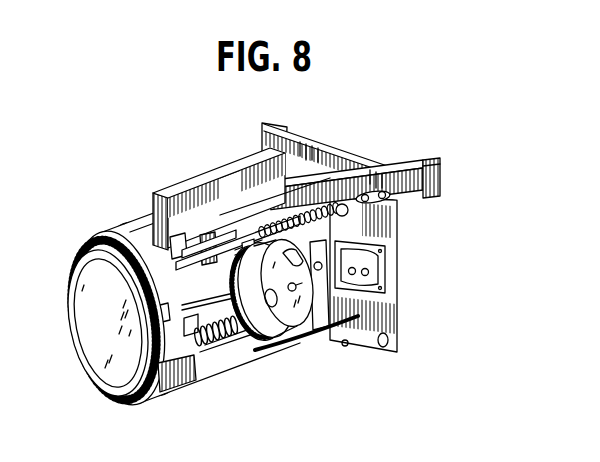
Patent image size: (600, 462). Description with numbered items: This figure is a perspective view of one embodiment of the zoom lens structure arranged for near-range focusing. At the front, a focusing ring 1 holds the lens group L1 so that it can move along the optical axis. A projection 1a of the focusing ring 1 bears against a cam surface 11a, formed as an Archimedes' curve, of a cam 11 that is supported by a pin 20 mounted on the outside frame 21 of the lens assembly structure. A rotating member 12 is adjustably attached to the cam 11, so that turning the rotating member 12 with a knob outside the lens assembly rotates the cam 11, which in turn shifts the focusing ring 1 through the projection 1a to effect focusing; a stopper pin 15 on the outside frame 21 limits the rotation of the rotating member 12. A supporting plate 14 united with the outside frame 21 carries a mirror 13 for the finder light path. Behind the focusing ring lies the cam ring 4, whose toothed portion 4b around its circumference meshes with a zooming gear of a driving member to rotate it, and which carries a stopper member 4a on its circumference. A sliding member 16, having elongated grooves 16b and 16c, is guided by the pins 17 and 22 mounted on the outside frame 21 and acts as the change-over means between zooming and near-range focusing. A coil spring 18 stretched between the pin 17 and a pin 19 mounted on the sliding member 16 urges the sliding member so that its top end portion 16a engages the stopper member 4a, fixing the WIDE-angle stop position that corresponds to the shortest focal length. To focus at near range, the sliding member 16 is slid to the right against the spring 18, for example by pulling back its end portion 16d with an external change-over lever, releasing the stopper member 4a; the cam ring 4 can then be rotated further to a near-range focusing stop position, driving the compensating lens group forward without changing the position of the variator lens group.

The lens group L1 is at (92, 328).
The focusing ring 1 is at (144, 309).
The projection 1a is at (217, 332).
The cam ring 4 is at (143, 222).
The stopper member 4a is at (173, 233).
The toothed portion 4b is at (255, 230).
The cam 11 is at (258, 345).
The cam surface 11a is at (226, 343).
The rotating member 12 is at (278, 352).
The mirror 13 is at (399, 262).
The supporting plate 14 is at (345, 342).
The stopper pin 15 is at (325, 340).
The sliding member 16 is at (198, 237).
The top end portion 16a is at (180, 232).
The elongated groove 16b is at (367, 197).
The elongated groove 16c is at (240, 243).
The end portion 16d is at (441, 180).
The pin 17 is at (272, 185).
The coil spring 18 is at (330, 215).
The pin 19 is at (346, 206).
The pin 20 is at (280, 330).
The outside frame 21 is at (322, 215).
The pin 22 is at (392, 193).